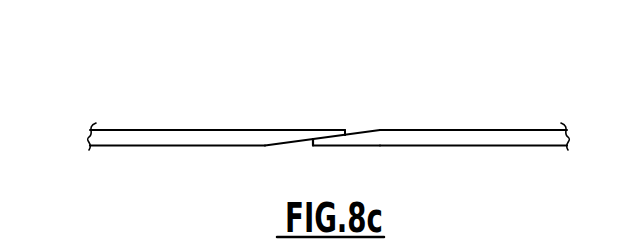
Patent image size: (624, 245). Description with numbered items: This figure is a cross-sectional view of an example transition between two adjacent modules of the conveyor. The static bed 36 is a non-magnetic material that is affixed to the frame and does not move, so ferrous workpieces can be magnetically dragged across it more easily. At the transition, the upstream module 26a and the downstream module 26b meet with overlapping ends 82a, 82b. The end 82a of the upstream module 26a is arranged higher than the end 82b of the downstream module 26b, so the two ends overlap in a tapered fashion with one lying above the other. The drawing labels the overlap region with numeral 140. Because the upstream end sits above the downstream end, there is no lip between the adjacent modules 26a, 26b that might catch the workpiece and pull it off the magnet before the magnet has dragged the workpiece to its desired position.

The upstream module 26a is at (161, 96).
The downstream module 26b is at (510, 84).
The static bed 36 is at (337, 118).
The end of the upstream module 82a is at (306, 135).
The end of the downstream module 82b is at (335, 143).
The scarf joint 140 is at (333, 98).